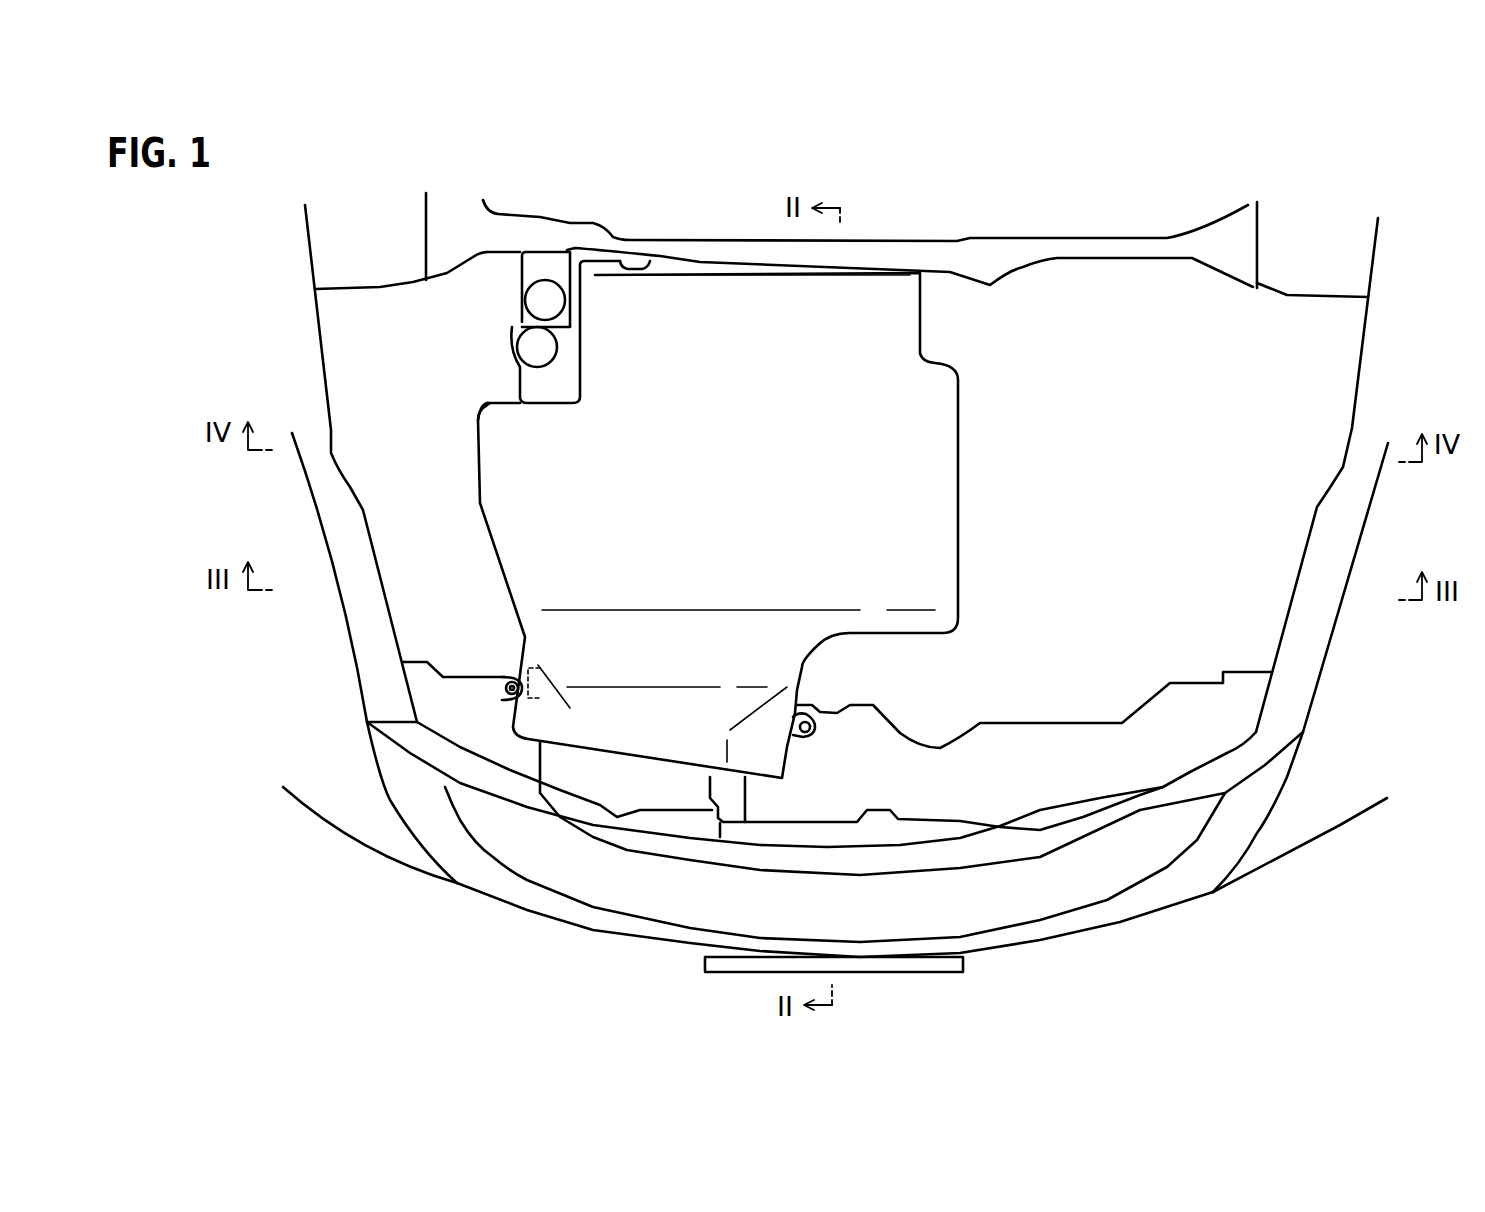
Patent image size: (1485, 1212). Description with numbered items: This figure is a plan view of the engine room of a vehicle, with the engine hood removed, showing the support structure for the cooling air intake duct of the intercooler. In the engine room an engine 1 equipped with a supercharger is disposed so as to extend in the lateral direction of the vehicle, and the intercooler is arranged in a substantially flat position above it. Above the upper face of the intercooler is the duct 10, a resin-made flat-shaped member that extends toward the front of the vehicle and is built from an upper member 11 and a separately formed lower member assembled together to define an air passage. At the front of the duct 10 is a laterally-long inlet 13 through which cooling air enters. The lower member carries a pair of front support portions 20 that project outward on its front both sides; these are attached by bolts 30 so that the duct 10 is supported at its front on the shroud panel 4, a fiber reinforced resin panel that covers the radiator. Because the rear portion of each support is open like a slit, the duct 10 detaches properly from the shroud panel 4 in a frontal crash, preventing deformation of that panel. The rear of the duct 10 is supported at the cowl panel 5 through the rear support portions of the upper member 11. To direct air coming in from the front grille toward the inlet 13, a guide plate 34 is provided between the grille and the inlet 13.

The engine 1 is at (565, 350).
The shroud panel 4 is at (1005, 772).
The cowl panel 5 is at (997, 253).
The duct 10 is at (872, 307).
The upper member 11 is at (735, 297).
The inlet 13 is at (593, 753).
The front support portions 20 is at (506, 688).
The bolts 30 is at (810, 714).
The guide plate 34 is at (610, 790).